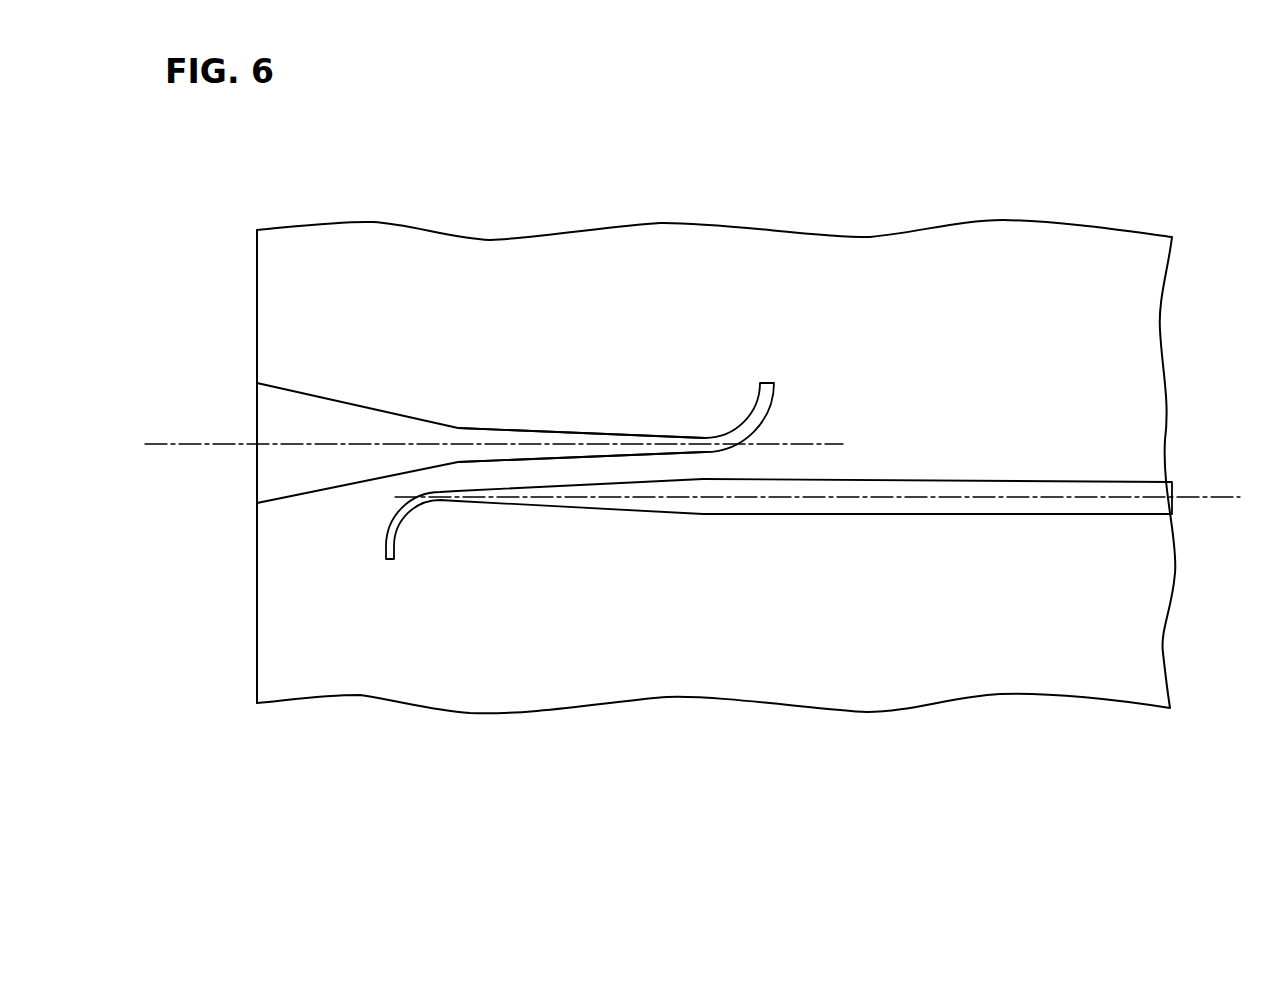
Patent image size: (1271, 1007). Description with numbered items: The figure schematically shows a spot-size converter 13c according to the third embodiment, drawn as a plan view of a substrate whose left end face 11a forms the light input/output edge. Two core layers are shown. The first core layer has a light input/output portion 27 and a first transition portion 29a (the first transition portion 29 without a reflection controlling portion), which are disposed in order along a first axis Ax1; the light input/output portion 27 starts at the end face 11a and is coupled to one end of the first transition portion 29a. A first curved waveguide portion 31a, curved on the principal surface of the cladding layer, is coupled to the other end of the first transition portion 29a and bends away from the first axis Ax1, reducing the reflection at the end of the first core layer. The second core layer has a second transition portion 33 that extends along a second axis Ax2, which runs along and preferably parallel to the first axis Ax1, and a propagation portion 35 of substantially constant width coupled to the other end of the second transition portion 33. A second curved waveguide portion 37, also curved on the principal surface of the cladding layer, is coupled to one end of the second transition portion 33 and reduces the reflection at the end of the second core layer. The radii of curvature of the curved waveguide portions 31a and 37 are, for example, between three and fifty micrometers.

The end face of substrate 11a is at (256, 300).
The spot-size converter 13c is at (1118, 225).
The light input/output portion 27 is at (257, 333).
The first transition portion 29a is at (458, 321).
The first transition portion 29 is at (581, 445).
The first curved waveguide portion 31a is at (777, 333).
The second transition portion 33 is at (457, 581).
The propagation portion 35 is at (703, 581).
The second curved waveguide portion 37 is at (386, 569).
The first axis Ax1 is at (160, 446).
The second axis Ax2 is at (1207, 500).